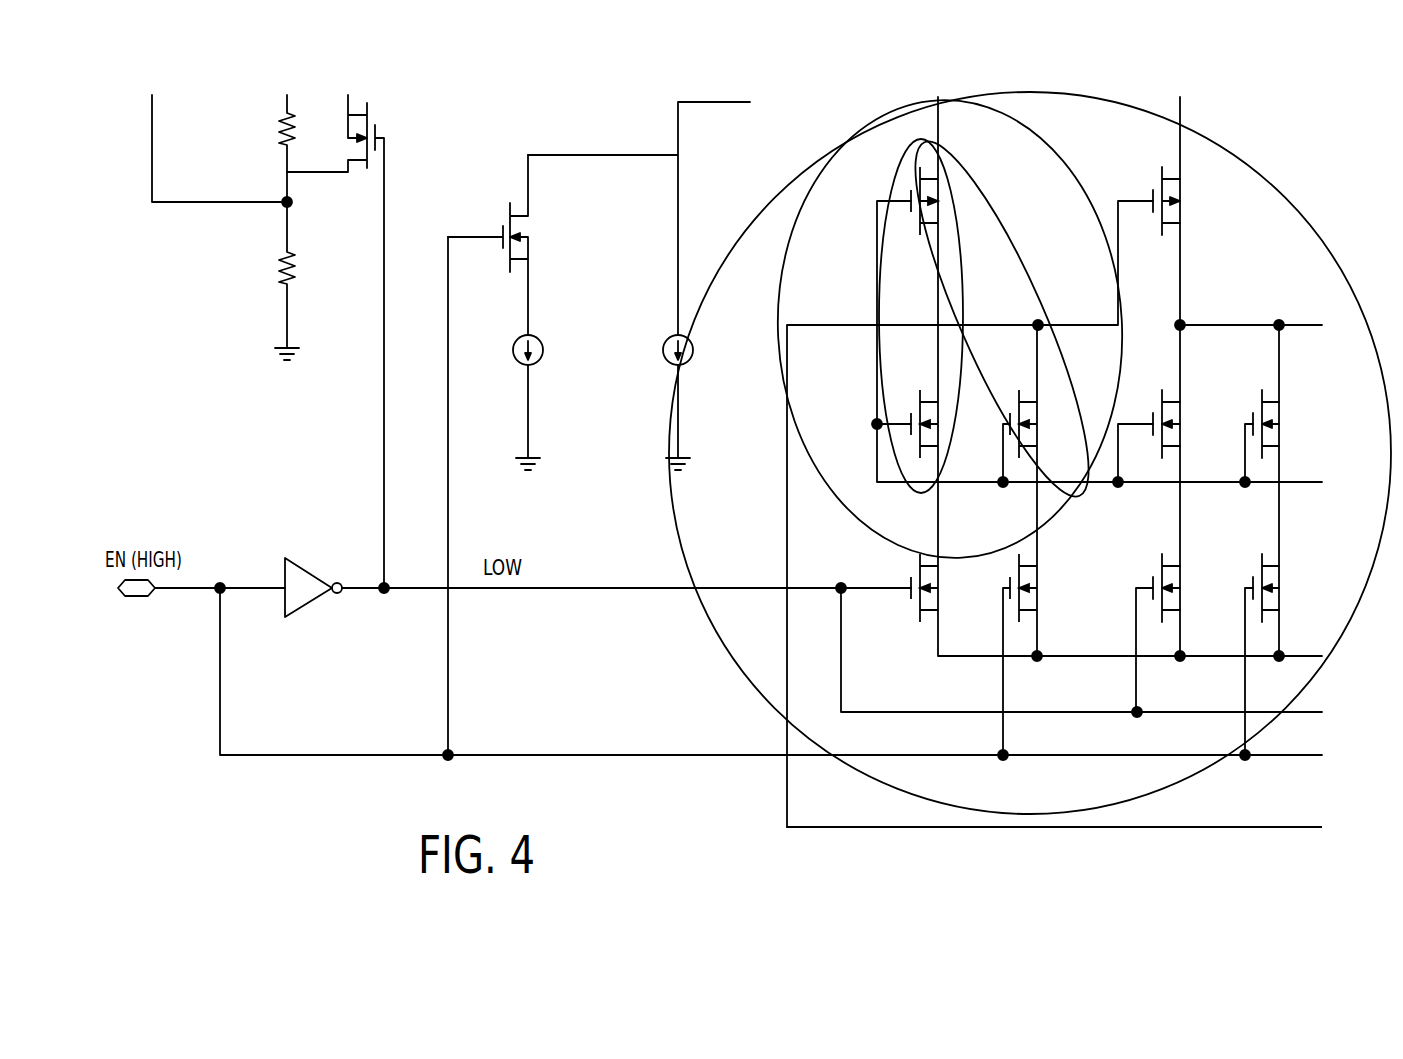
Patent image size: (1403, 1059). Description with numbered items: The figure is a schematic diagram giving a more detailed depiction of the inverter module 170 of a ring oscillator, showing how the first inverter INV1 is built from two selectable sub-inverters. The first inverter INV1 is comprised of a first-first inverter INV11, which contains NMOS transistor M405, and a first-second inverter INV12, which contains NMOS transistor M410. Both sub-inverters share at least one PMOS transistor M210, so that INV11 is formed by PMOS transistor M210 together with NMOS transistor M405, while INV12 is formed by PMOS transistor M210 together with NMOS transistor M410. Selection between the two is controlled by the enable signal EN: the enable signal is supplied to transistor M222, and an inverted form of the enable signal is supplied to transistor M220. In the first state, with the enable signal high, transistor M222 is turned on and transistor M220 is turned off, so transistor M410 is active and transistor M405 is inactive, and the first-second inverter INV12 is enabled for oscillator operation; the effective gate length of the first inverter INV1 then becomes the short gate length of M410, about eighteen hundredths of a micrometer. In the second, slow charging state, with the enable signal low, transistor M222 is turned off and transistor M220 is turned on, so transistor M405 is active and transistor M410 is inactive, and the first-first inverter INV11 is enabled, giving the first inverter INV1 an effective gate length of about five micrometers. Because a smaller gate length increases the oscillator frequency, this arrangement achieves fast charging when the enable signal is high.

The inverter module 170 is at (1250, 118).
The first inverter INV1 is at (1054, 576).
The first-first inverter INV11 is at (893, 316).
The first-second inverter INV12 is at (949, 328).
The PMOS transistor M210 is at (918, 228).
The NMOS transistor M405 is at (919, 397).
The NMOS transistor M410 is at (1017, 398).
The transistor M220 is at (918, 570).
The transistor M222 is at (1022, 567).